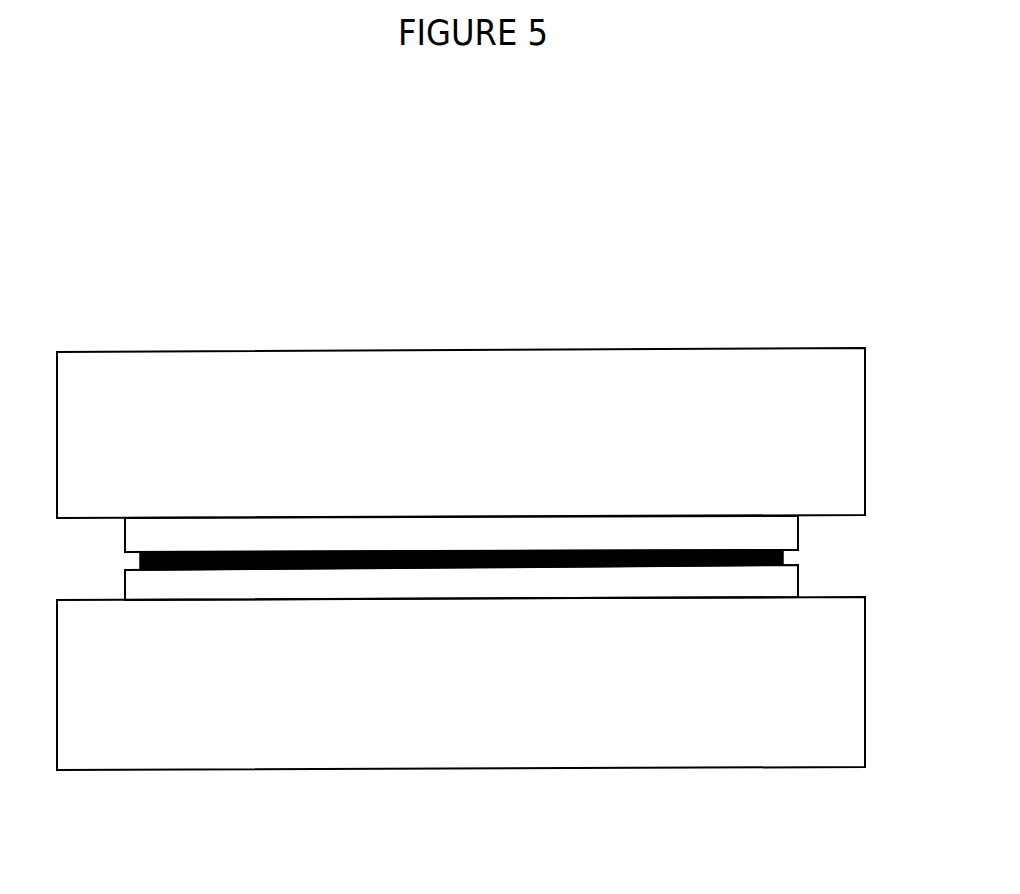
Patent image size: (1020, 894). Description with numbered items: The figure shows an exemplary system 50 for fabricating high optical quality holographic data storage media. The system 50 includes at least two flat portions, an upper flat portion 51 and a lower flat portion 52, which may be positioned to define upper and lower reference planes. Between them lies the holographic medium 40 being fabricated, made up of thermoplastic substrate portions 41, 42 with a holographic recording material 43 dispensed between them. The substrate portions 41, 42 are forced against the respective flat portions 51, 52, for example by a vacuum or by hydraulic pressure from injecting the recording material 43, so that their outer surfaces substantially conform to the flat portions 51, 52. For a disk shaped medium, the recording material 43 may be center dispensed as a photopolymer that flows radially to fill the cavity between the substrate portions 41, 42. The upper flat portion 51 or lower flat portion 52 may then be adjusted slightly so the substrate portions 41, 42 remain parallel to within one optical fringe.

The system 50 is at (372, 308).
The upper flat portion 51 is at (831, 365).
The lower flat portion 52 is at (833, 745).
The holographic medium 40 is at (100, 552).
The thermoplastic substrate portion 41 is at (800, 530).
The thermoplastic substrate portion 42 is at (800, 578).
The holographic recording material 43 is at (798, 559).